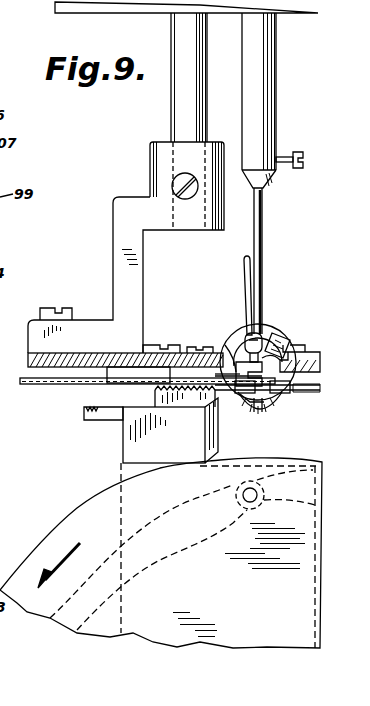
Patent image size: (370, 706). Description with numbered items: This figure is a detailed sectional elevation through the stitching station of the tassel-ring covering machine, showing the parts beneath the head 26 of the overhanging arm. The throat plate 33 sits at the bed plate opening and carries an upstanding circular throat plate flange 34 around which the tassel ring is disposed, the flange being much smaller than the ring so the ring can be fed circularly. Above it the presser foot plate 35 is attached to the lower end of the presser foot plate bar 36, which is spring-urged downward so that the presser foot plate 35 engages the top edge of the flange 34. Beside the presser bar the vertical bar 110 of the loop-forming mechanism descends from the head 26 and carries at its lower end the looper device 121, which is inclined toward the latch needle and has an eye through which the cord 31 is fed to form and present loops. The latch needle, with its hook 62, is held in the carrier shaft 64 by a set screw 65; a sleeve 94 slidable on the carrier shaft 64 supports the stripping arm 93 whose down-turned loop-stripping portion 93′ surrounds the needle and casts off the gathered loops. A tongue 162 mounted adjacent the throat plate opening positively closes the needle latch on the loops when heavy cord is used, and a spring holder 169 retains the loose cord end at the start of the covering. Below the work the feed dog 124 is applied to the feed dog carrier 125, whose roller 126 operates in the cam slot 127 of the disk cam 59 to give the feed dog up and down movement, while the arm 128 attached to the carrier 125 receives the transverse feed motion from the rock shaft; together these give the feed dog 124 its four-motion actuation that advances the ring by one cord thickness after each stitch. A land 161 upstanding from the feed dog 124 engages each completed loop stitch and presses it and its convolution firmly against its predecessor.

The head 26 is at (158, 12).
The presser foot plate bar 36 is at (172, 97).
The vertical bar 110 is at (258, 93).
The presser foot plate 35 is at (112, 284).
The spring holder 169 is at (127, 378).
The throat plate 33 is at (103, 383).
The arm 128 is at (84, 412).
The feed dog 124 is at (188, 399).
The feed dog carrier 125 is at (133, 447).
The looper device 121 is at (264, 263).
The cord 31 is at (246, 283).
The throat plate flange 34 is at (282, 390).
The arm 93 is at (250, 320).
The tongue 162 is at (244, 350).
The loop-stripping portion 93′ is at (262, 332).
The set screw 65 is at (284, 342).
The sleeve 94 is at (272, 394).
The hook 62 is at (274, 424).
The projection or land 161 is at (258, 412).
The carrier shaft 64 is at (260, 404).
The disk cam 59 is at (78, 510).
The roller 126 is at (267, 495).
The cam slot 127 is at (155, 558).